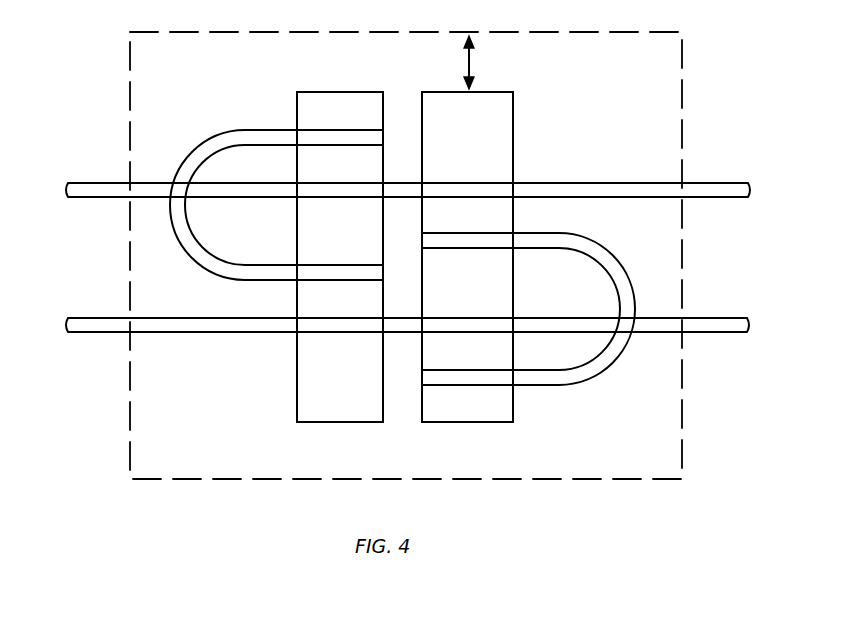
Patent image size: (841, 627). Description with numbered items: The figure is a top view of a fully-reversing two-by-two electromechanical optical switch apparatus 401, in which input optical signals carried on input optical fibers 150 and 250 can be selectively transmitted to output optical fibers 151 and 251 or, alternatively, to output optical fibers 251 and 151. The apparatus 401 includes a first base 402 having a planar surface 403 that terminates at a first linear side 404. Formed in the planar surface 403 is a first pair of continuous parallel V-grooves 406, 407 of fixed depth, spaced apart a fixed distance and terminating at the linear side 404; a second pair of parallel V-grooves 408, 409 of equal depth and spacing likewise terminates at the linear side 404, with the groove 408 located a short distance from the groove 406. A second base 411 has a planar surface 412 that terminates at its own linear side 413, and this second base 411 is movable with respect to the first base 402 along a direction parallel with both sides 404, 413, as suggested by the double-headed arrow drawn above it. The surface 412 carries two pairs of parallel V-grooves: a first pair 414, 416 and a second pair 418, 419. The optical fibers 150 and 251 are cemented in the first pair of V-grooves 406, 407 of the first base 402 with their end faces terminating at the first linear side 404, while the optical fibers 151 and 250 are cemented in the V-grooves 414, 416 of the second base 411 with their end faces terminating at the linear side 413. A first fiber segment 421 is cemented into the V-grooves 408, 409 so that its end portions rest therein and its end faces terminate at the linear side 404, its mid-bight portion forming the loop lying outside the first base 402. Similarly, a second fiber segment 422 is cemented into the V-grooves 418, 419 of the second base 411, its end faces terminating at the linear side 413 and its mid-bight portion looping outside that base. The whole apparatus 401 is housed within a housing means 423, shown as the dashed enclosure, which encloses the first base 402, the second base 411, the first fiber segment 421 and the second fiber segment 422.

The electromechanical optical switch apparatus 401 is at (64, 242).
The housing means 423 is at (683, 52).
The first base 402 is at (310, 424).
The planar surface 403 is at (353, 408).
The first linear side 404 is at (385, 404).
The second base 411 is at (494, 424).
The planar surface 412 is at (498, 405).
The linear side 413 is at (415, 405).
The V-groove 406 is at (318, 183).
The V-groove 407 is at (318, 333).
The V-groove 408 is at (319, 129).
The V-groove 409 is at (322, 282).
The V-groove 414 is at (477, 183).
The V-groove 416 is at (483, 318).
The V-groove 418 is at (483, 232).
The V-groove 419 is at (485, 370).
The first fiber segment 421 is at (209, 148).
The second fiber segment 422 is at (612, 258).
The input optical fiber 150 is at (106, 183).
The output optical fiber 151 is at (698, 183).
The output optical fiber 251 is at (108, 318).
The input optical fiber 250 is at (700, 318).